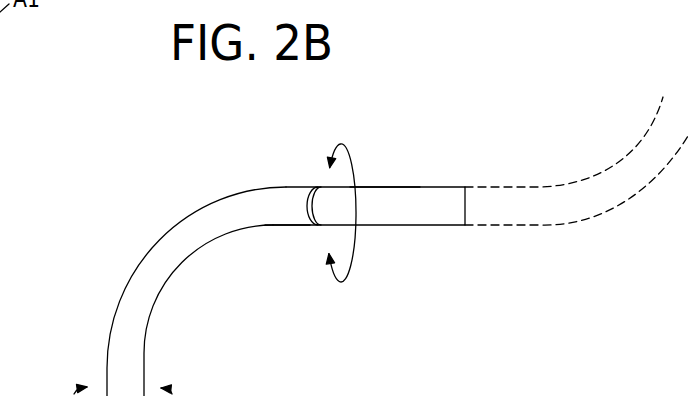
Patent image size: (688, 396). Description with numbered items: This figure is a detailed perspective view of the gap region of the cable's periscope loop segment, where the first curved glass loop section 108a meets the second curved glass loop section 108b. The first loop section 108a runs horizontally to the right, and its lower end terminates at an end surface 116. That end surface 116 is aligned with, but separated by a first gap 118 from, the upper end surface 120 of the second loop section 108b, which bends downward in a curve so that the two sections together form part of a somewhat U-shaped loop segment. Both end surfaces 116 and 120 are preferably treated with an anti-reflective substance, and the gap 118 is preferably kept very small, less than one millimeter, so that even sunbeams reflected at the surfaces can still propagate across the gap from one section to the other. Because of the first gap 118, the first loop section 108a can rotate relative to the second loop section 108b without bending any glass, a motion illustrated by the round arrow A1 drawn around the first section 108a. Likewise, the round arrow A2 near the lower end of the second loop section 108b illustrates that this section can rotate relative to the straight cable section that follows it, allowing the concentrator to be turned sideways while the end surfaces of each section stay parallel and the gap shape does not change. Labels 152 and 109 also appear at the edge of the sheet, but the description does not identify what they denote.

The first curved glass loop section 108a is at (453, 187).
The second curved glass loop section 108b is at (116, 292).
The end surface 116 is at (373, 187).
The first gap 118 is at (317, 187).
The upper end surface 120 is at (283, 227).
The round arrow A1 is at (356, 248).
The round arrow A2 is at (62, 395).
The component (adjacent figure) 152 is at (0, 40).
The component (adjacent figure) 109 is at (18, 65).